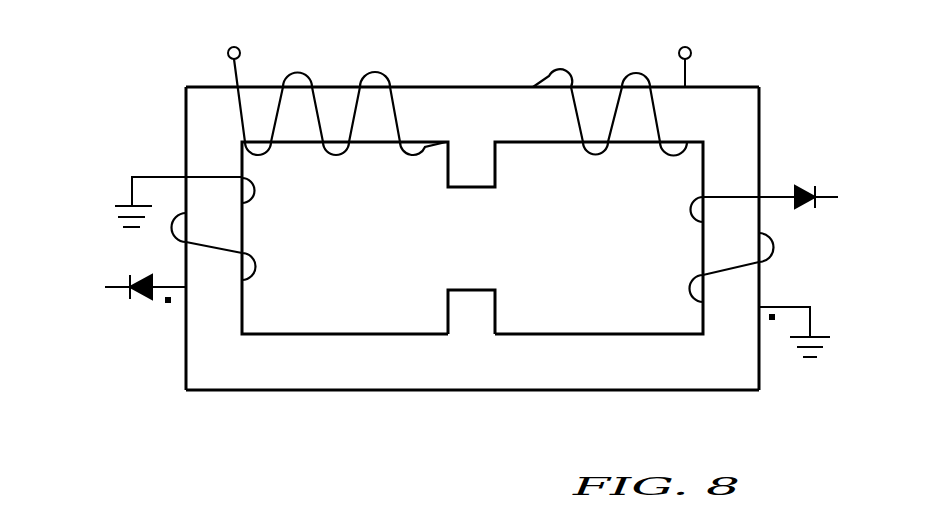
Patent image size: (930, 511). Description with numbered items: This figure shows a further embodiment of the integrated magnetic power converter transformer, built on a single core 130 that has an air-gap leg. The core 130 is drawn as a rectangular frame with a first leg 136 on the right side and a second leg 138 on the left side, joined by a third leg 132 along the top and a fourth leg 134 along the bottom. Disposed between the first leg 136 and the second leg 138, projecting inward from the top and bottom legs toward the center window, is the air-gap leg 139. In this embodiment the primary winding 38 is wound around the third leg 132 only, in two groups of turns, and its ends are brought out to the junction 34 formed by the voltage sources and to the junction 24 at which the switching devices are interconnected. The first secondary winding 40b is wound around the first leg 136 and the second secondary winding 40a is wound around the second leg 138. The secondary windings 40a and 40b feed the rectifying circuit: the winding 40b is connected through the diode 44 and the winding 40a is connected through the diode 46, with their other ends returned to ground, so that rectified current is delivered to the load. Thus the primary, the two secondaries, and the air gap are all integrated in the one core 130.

The junction 24 is at (692, 51).
The junction 34 is at (228, 53).
The primary winding 38 is at (340, 153).
The secondary winding 40a is at (155, 177).
The secondary winding 40b is at (765, 197).
The diode 44 is at (798, 207).
The diode 46 is at (142, 277).
The core 130 is at (282, 353).
The third leg 132 is at (470, 115).
The fourth leg 134 is at (477, 362).
The first leg 136 is at (735, 155).
The second leg 138 is at (212, 152).
The air-gap leg 139 is at (473, 300).